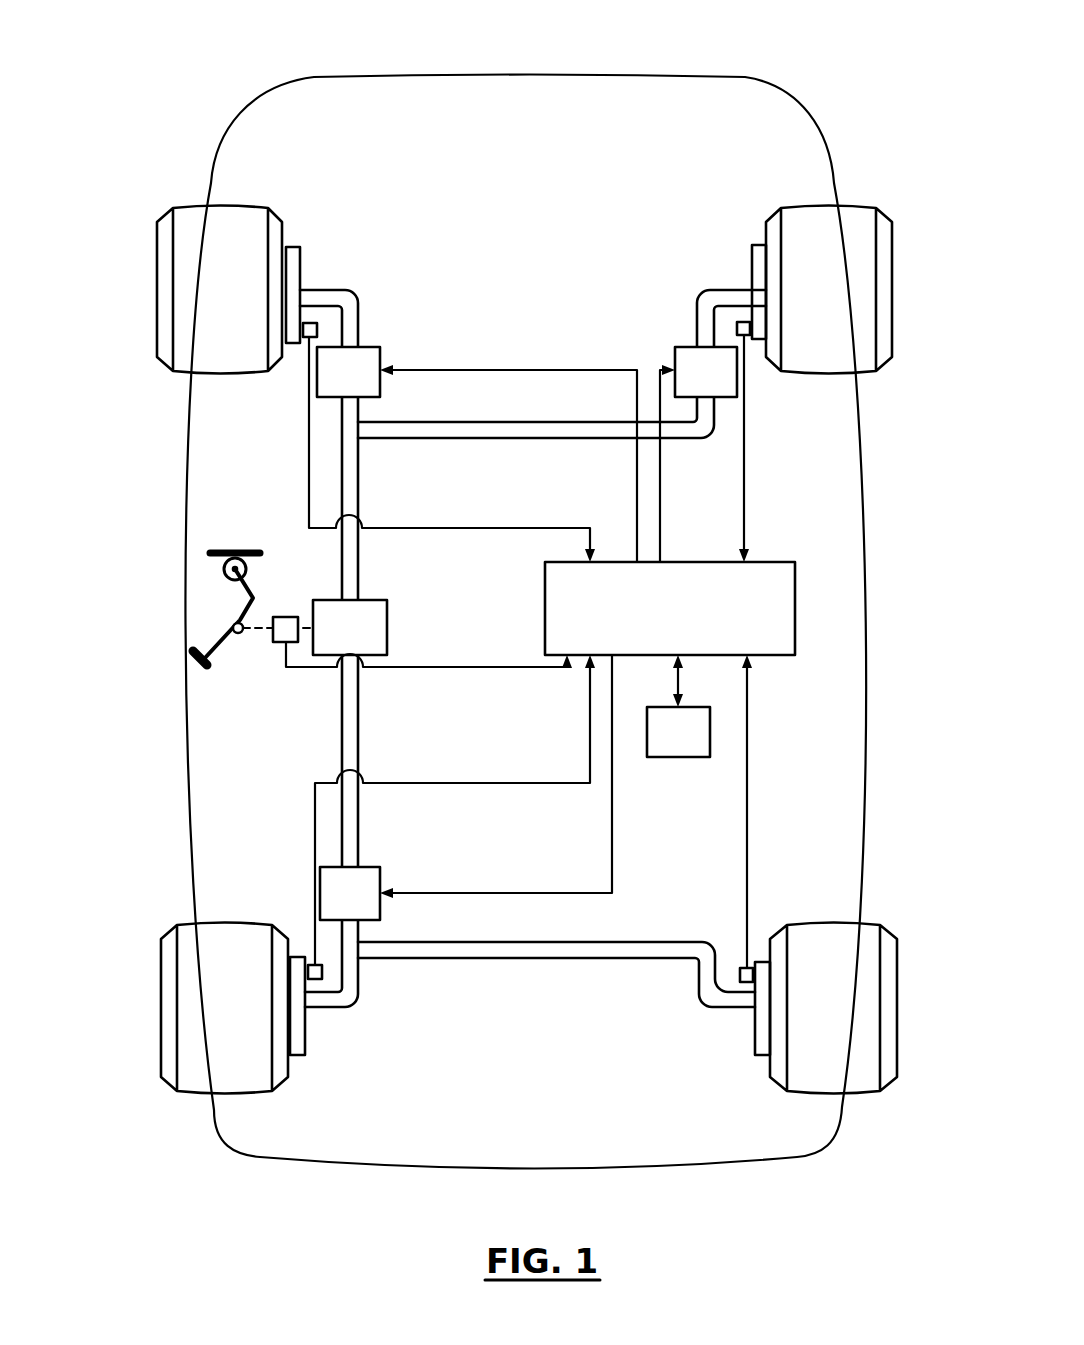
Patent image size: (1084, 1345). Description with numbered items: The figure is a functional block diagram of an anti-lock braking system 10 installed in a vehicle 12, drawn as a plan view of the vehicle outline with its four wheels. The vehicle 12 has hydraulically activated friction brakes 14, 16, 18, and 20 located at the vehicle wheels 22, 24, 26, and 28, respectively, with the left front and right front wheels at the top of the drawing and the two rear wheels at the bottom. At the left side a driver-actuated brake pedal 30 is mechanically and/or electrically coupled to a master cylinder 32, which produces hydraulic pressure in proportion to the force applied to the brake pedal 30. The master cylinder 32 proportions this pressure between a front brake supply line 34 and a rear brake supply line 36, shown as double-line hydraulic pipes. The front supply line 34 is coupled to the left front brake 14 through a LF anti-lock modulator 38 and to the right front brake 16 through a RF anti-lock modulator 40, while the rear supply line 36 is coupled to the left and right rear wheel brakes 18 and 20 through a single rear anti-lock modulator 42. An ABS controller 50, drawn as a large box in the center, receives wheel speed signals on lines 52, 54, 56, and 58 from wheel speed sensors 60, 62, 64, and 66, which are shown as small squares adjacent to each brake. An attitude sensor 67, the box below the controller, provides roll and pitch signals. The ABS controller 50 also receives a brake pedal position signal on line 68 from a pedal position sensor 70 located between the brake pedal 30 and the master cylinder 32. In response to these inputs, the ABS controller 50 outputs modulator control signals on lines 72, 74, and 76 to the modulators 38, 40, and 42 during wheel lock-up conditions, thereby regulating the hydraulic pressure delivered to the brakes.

The anti-lock braking system 10 is at (455, 172).
The vehicle 12 is at (826, 139).
The left front brake 14 is at (287, 247).
The right front brake 16 is at (760, 246).
The left rear wheel brake 18 is at (303, 1050).
The right rear wheel brake 20 is at (760, 1050).
The vehicle wheel 22 is at (157, 294).
The vehicle wheel 24 is at (890, 294).
The vehicle wheel 26 is at (161, 1000).
The vehicle wheel 28 is at (897, 1000).
The brake pedal 30 is at (222, 652).
The master cylinder 32 is at (386, 622).
The front brake supply line 34 is at (349, 492).
The rear brake supply line 36 is at (351, 722).
The LF anti-lock modulator 38 is at (381, 351).
The RF anti-lock modulator 40 is at (675, 352).
The rear anti-lock modulator 42 is at (381, 873).
The ABS controller 50 is at (770, 562).
The wheel speed signal line 52 is at (309, 492).
The wheel speed signal line 54 is at (745, 492).
The wheel speed signal line 56 is at (455, 782).
The wheel speed signal line 58 is at (749, 790).
The wheel speed sensor 60 is at (309, 338).
The wheel speed sensor 62 is at (745, 335).
The wheel speed sensor 64 is at (312, 964).
The wheel speed sensor 66 is at (748, 967).
The attitude sensor 67 is at (690, 758).
The brake pedal position signal line 68 is at (451, 667).
The pedal position sensor 70 is at (291, 616).
The modulator control signal line 72 is at (636, 405).
The modulator control signal line 74 is at (661, 487).
The modulator control signal line 76 is at (614, 832).